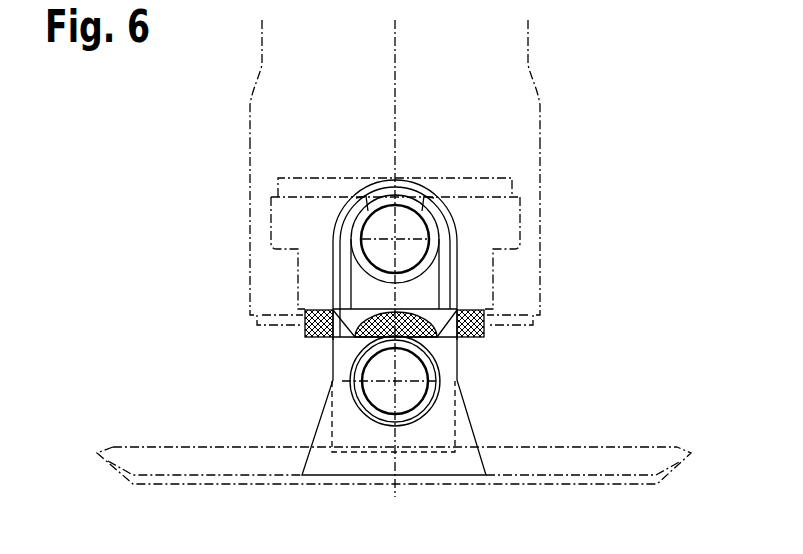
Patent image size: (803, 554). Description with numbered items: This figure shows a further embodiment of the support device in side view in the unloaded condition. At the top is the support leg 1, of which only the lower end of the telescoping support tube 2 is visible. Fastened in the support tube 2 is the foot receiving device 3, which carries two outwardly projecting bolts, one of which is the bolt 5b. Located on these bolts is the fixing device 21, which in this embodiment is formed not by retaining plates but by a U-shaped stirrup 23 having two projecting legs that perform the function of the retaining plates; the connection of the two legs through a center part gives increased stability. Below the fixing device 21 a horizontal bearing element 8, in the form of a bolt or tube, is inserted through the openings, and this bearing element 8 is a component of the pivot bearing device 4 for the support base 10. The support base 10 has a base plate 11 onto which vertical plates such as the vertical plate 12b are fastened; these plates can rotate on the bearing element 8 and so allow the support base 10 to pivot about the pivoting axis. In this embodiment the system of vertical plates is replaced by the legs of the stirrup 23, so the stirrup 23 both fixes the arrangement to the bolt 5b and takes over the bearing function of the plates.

The support leg 1 is at (638, 91).
The support tube 2 is at (540, 214).
The foot receiving device 3 is at (503, 213).
The pivot bearing device 4 is at (295, 374).
The bolt 5b is at (378, 230).
The bearing element 8 is at (362, 398).
The support base 10 is at (657, 413).
The base plate 11 is at (622, 483).
The vertical plate 12b is at (462, 455).
The fixing device 21 is at (458, 300).
The U-shaped stirrup 23 is at (457, 350).